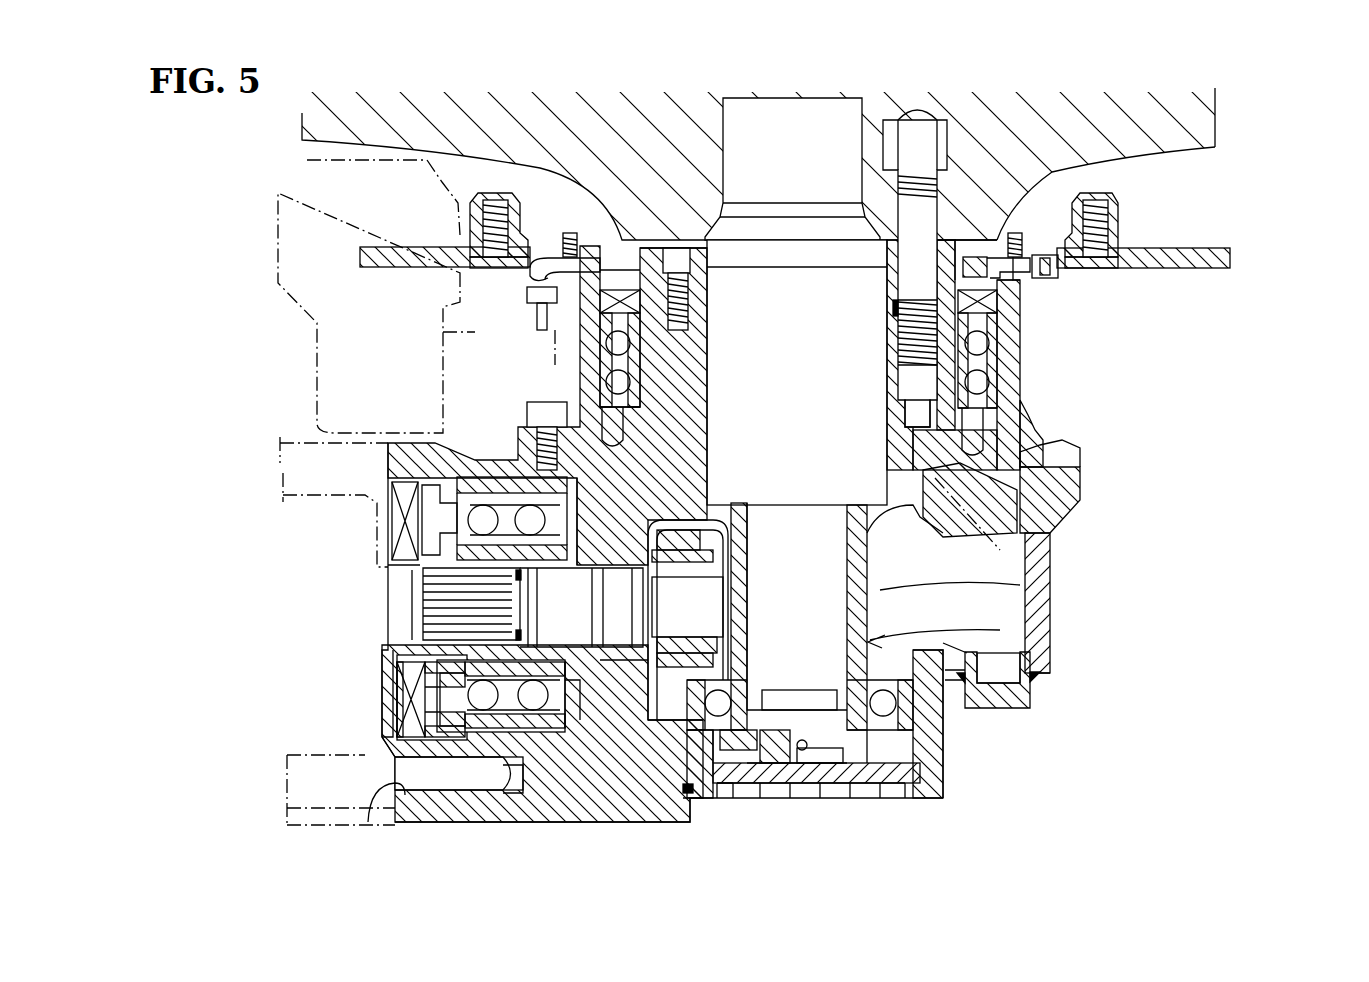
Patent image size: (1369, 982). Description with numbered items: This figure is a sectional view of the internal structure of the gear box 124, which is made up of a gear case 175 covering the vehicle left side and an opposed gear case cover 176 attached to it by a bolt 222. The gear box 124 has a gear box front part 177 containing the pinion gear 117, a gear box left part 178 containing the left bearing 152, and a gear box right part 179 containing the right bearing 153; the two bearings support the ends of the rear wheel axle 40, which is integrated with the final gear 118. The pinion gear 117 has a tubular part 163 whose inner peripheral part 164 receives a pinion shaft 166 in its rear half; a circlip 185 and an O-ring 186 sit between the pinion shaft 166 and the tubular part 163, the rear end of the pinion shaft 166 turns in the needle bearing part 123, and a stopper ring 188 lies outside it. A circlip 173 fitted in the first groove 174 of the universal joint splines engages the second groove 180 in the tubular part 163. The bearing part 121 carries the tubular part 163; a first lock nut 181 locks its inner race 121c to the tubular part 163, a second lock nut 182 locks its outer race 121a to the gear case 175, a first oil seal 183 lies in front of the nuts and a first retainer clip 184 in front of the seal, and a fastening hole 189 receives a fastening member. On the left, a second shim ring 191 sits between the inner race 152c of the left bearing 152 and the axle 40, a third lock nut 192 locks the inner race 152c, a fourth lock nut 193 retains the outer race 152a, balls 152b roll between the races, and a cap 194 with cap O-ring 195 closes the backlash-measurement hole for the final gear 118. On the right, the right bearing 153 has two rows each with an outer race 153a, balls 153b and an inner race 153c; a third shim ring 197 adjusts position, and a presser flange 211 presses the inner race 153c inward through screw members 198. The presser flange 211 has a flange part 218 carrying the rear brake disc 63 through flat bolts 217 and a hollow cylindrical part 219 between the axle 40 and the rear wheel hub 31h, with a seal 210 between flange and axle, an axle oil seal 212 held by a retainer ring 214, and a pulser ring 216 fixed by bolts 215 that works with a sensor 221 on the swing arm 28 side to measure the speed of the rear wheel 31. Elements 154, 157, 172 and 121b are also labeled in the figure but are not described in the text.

The rear wheel 31 is at (1243, 110).
The rear wheel hub 31h is at (1045, 165).
The bolt 154 is at (915, 125).
The hollow cylindrical part 219 is at (955, 235).
The flange part 218 is at (975, 175).
The presser flange 211 is at (659, 221).
The flat bolts 217 is at (490, 200).
The bolts 215 is at (568, 232).
The seal 210 is at (621, 288).
The screw members 198 is at (680, 245).
The pulser ring 216 is at (1085, 278).
The rear brake disc 63 is at (1232, 258).
The gear box right part 179 is at (1000, 305).
The retainer ring 214 is at (895, 308).
The axle oil seal 212 is at (905, 325).
The third shim ring 197 is at (905, 405).
The right bearing 153 is at (1098, 372).
The outer race 153a is at (990, 350).
The balls 153b is at (997, 340).
The inner race 153c is at (997, 325).
The sensor 221 is at (525, 305).
The bolt 222 is at (550, 400).
The flange 157 is at (305, 497).
The second groove 180 is at (495, 592).
The gear box front part 177 is at (368, 609).
The first lock nut 181 is at (400, 672).
The first oil seal 183 is at (410, 692).
The second lock nut 182 is at (392, 722).
The first retainer clip 184 is at (380, 740).
The swing arm 28 is at (300, 835).
The fastening hole 189 is at (368, 822).
The shaft end 172 is at (430, 822).
The tubular part 163 is at (465, 763).
The circlip 173 is at (485, 712).
The bearing part 121 is at (535, 715).
The outer race 121a is at (548, 730).
The outer race 121b is at (592, 735).
The inner race 121c is at (600, 760).
The first groove 174 is at (580, 720).
The circlip 185 is at (628, 700).
The pinion gear 117 is at (660, 790).
The O-ring 186 is at (690, 722).
The inner peripheral part 164 is at (570, 647).
The pinion shaft 166 is at (723, 607).
The bearing part 123 is at (722, 798).
The stopper ring 188 is at (760, 775).
The second shim ring 191 is at (810, 783).
The third lock nut 192 is at (822, 763).
The left bearing 152 is at (900, 769).
The outer race 152a is at (905, 705).
The balls 152b is at (888, 730).
The inner race 152c is at (868, 745).
The fourth lock nut 193 is at (912, 798).
The final gear 118 is at (1043, 560).
The rear wheel axle 40 is at (1000, 590).
The gear box 124 is at (1157, 483).
The gear case 175 is at (1065, 495).
The gear case cover 176 is at (1080, 452).
The gear box left part 178 is at (1043, 627).
The cap 194 is at (1005, 712).
The cap O-ring 195 is at (1033, 680).